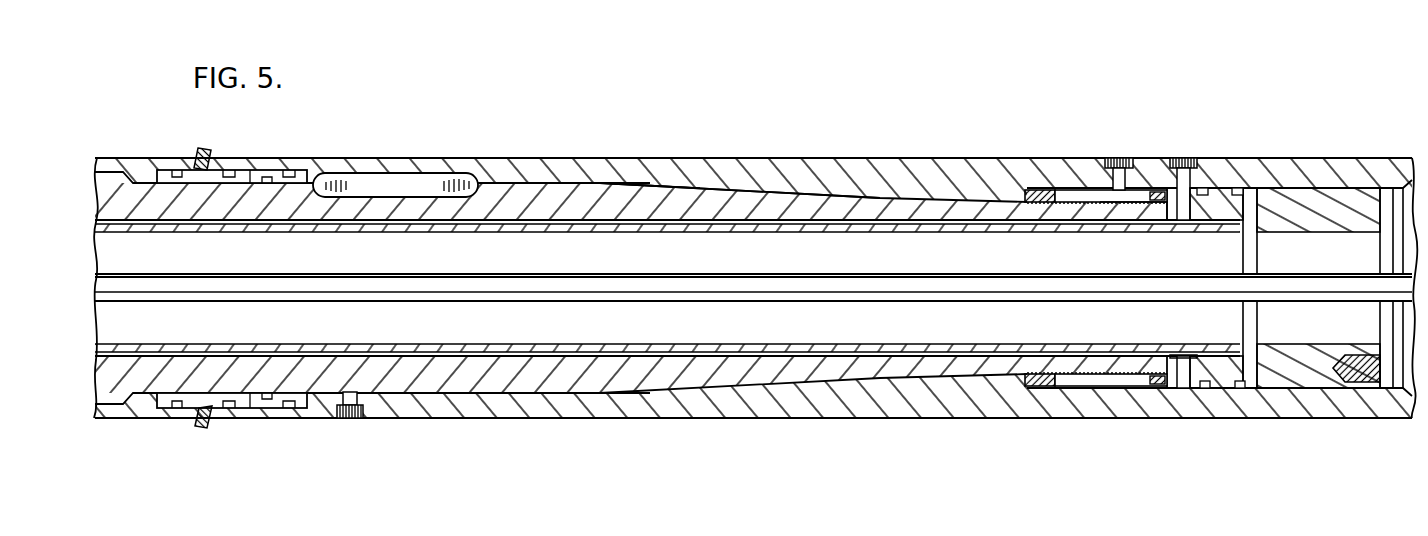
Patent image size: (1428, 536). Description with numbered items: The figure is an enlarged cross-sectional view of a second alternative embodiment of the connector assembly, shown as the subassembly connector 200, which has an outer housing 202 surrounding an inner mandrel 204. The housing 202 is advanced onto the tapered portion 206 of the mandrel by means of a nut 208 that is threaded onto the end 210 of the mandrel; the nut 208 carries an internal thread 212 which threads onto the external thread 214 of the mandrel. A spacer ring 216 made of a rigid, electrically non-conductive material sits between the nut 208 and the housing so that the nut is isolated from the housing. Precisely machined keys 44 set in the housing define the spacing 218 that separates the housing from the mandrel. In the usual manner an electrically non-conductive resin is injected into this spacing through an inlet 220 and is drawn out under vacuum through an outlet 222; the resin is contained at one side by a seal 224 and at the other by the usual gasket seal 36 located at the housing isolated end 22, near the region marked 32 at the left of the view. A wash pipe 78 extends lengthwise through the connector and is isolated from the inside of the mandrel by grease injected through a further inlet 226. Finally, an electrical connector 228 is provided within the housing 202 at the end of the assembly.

The housing isolated end 22 is at (210, 160).
The mounting surface 32 is at (164, 156).
The gasket seal 36 is at (246, 158).
The keys 44 is at (398, 185).
The wash pipe 78 is at (680, 338).
The subassembly connector 200 is at (762, 148).
The housing 202 is at (606, 165).
The mandrel 204 is at (537, 213).
The tapered portion 206 is at (762, 205).
The nut 208 is at (1070, 192).
The end of the mandrel 210 is at (1140, 366).
The internal thread 212 is at (1098, 376).
The external thread 214 is at (1130, 208).
The spacer ring 216 is at (1035, 190).
The spacing 218 is at (705, 178).
The inlet 220 is at (350, 420).
The outlet 222 is at (1118, 158).
The seal 224 is at (1158, 192).
The inlet 226 is at (1190, 160).
The electrical connector 228 is at (1323, 212).